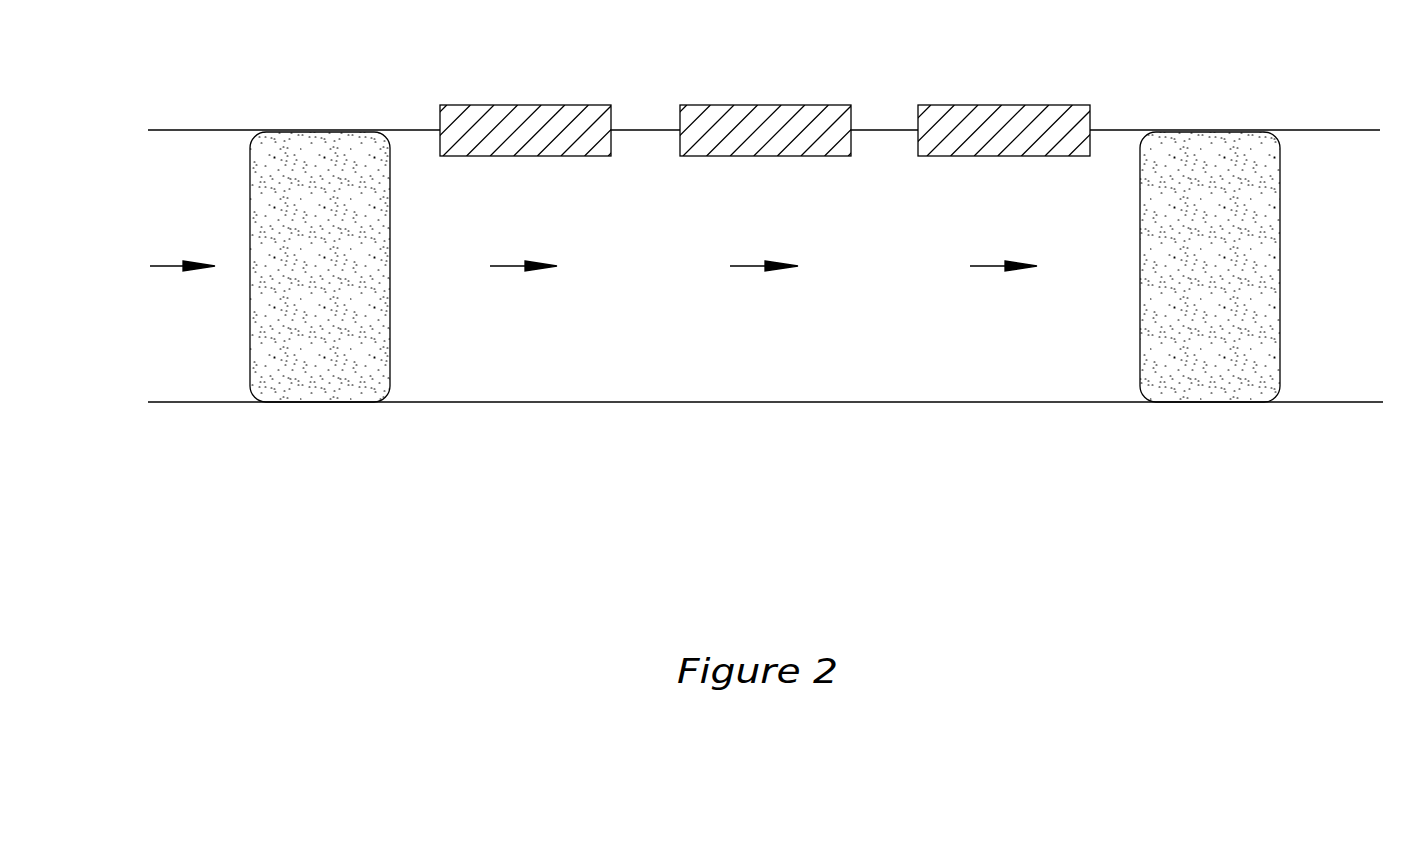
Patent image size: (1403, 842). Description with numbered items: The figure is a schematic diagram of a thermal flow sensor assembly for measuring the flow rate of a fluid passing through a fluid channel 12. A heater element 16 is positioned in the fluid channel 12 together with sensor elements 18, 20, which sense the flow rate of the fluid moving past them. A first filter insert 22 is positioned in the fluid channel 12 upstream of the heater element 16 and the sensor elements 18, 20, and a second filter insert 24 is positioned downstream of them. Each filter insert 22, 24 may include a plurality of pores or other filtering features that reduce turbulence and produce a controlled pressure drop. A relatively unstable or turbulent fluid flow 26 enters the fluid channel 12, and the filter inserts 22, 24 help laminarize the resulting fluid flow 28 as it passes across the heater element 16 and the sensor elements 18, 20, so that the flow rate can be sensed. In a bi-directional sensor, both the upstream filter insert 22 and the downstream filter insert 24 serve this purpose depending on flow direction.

The fluid channel 12 is at (424, 162).
The heater element 16 is at (763, 105).
The sensor element 18 is at (523, 105).
The sensor element 20 is at (1003, 105).
The first filter insert 22 is at (303, 142).
The second filter insert 24 is at (1212, 142).
The turbulent fluid flow 26 is at (163, 268).
The fluid flow 28 is at (505, 268).